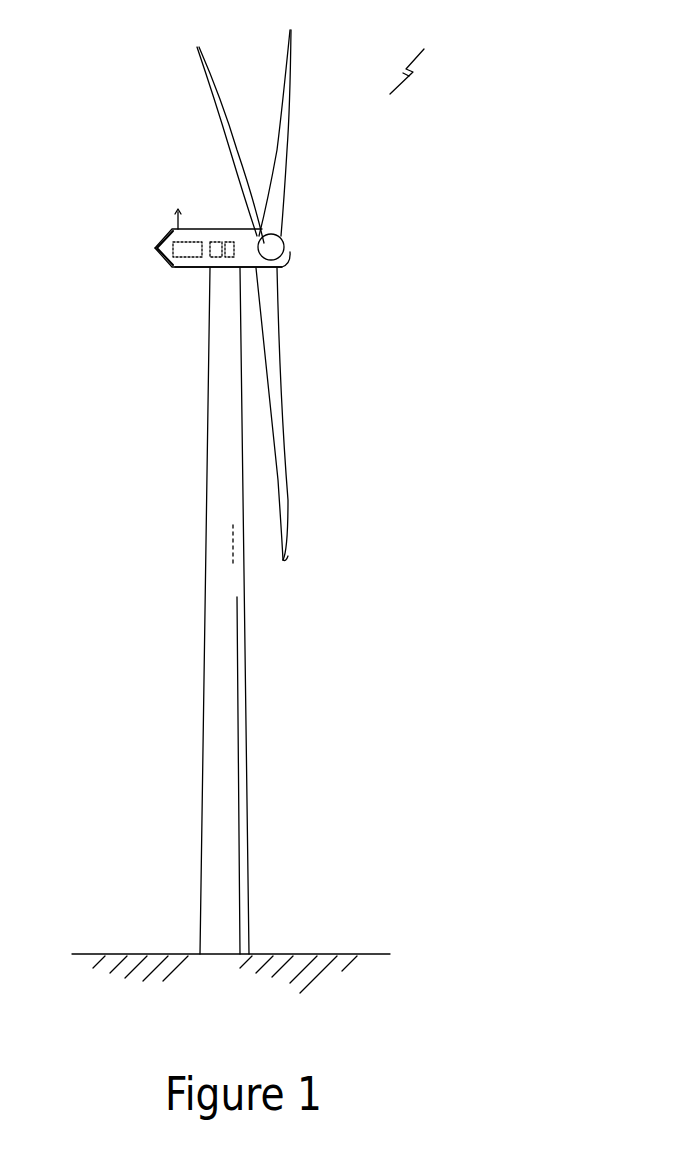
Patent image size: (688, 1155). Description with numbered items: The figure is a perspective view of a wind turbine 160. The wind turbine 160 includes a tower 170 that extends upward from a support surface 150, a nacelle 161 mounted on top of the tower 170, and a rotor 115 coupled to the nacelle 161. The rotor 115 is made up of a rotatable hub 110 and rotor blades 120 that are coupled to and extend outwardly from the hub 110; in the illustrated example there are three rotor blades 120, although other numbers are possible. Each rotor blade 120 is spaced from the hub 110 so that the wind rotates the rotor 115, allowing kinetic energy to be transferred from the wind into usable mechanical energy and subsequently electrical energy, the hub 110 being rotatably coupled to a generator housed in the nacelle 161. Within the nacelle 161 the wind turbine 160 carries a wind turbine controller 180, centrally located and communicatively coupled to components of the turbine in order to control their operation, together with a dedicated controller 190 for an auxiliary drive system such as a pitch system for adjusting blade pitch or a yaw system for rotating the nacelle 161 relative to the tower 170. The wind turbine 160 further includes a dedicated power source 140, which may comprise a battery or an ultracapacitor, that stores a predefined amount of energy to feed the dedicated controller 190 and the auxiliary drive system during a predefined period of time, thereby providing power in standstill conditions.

The rotatable hub 110 is at (285, 253).
The rotor 115 is at (294, 222).
The rotor blade 120 is at (283, 63).
The dedicated power source 140 is at (155, 250).
The support surface 150 is at (140, 953).
The wind turbine 160 is at (436, 67).
The nacelle 161 is at (187, 270).
The tower 170 is at (212, 705).
The wind turbine controller 180 is at (229, 229).
The dedicated controller 190 is at (210, 242).